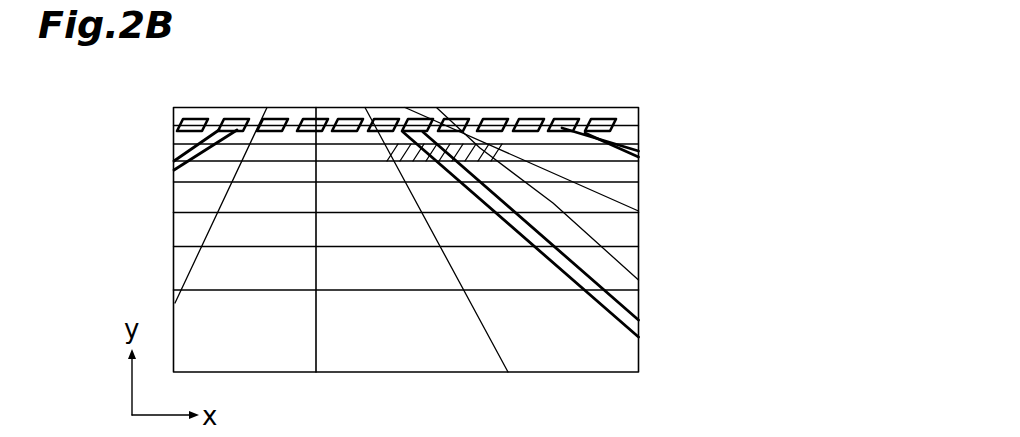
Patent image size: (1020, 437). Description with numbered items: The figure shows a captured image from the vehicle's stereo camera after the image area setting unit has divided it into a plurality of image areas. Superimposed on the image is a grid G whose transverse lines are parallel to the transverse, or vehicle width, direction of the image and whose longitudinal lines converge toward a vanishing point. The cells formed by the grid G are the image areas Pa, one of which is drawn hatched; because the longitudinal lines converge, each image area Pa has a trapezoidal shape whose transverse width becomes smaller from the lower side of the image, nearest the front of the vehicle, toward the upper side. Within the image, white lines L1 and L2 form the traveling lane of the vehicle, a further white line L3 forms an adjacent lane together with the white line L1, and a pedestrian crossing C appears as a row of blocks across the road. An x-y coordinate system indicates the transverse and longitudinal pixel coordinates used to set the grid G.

The pedestrian crossing C is at (345, 118).
The image area Pa is at (424, 146).
The grid G is at (476, 119).
The white line L1 is at (587, 268).
The white line L2 is at (192, 147).
The white line L3 is at (616, 142).